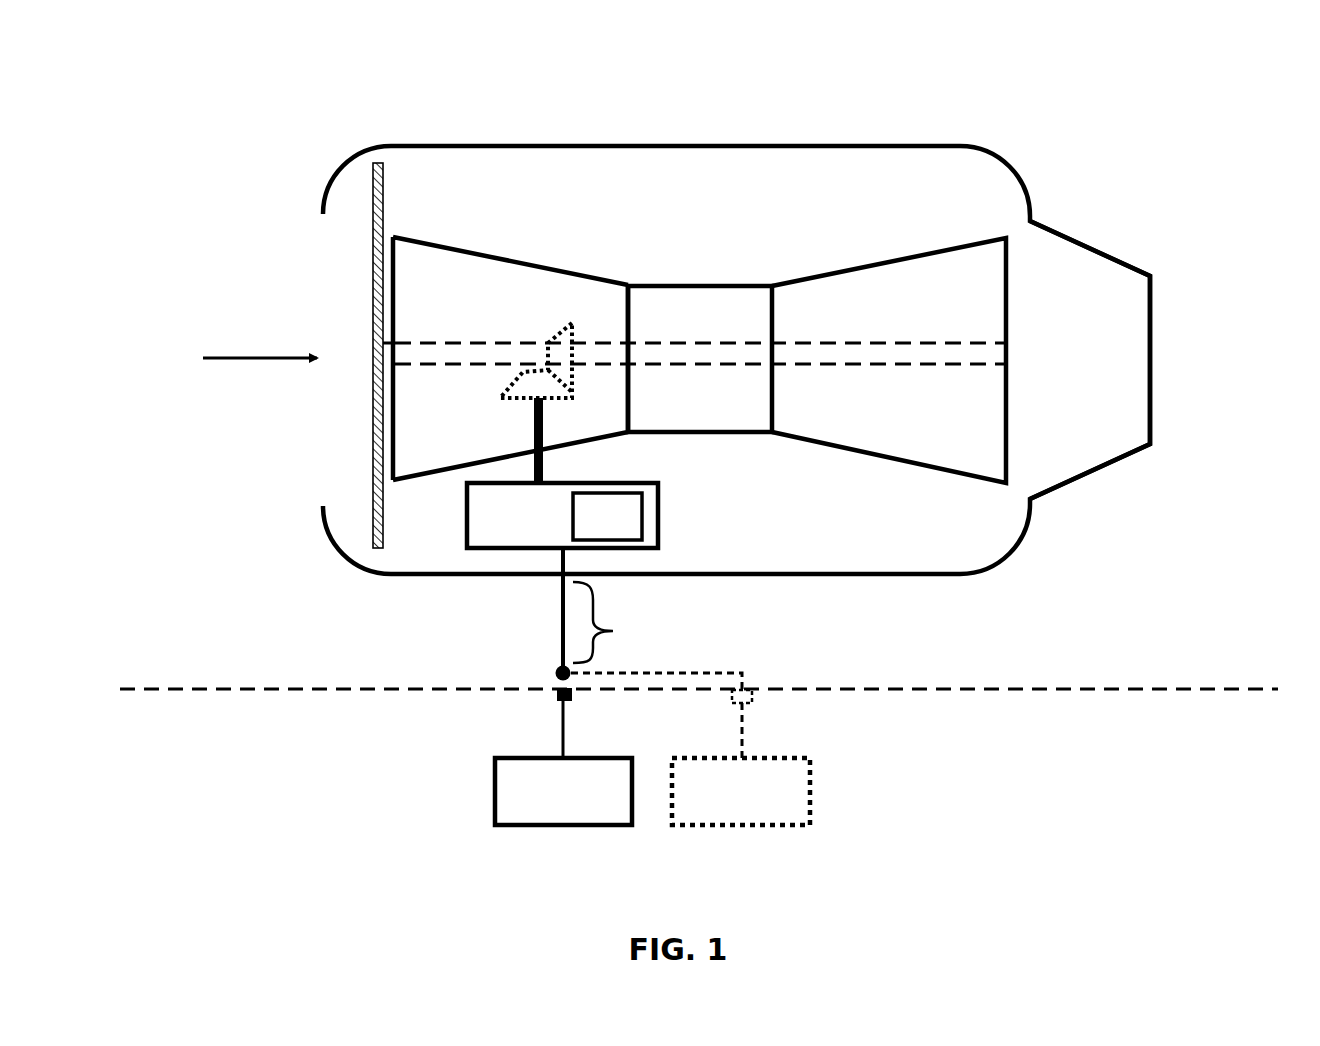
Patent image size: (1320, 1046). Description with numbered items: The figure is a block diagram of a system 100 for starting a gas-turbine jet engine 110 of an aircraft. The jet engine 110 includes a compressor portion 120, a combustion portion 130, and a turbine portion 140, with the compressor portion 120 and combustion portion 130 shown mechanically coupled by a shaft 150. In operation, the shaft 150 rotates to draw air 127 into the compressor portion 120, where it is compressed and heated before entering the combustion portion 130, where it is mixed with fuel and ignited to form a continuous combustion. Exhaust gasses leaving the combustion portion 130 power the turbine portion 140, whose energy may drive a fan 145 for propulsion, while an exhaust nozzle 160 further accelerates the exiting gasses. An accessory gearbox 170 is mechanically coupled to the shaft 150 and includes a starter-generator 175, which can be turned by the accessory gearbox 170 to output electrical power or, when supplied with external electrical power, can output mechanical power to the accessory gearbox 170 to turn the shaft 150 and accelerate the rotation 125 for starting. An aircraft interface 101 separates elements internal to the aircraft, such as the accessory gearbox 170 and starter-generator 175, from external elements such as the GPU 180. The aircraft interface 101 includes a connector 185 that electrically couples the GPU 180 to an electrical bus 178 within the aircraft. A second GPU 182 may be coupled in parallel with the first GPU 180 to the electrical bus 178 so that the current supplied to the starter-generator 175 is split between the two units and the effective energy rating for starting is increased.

The system 100 is at (176, 82).
The aircraft interface 101 is at (196, 687).
The jet engine 110 is at (675, 143).
The compressor portion 120 is at (532, 264).
The rotation 125 is at (449, 387).
The air 127 is at (258, 357).
The combustion portion 130 is at (705, 285).
The turbine portion 140 is at (885, 262).
The fan 145 is at (384, 218).
The shaft 150 is at (857, 343).
The exhaust nozzle 160 is at (1148, 351).
The accessory gearbox 170 is at (658, 515).
The starter-generator 175 is at (605, 493).
The electrical bus 178 is at (626, 628).
The GPU 180 is at (518, 758).
The second GPU 182 is at (718, 758).
The connector 185 is at (572, 692).